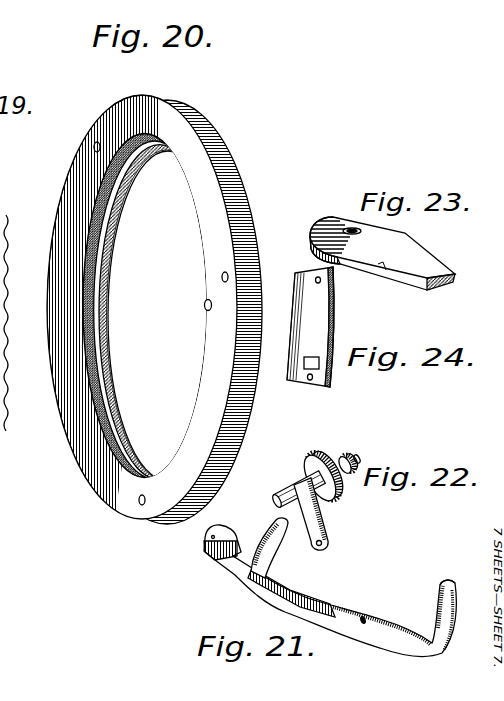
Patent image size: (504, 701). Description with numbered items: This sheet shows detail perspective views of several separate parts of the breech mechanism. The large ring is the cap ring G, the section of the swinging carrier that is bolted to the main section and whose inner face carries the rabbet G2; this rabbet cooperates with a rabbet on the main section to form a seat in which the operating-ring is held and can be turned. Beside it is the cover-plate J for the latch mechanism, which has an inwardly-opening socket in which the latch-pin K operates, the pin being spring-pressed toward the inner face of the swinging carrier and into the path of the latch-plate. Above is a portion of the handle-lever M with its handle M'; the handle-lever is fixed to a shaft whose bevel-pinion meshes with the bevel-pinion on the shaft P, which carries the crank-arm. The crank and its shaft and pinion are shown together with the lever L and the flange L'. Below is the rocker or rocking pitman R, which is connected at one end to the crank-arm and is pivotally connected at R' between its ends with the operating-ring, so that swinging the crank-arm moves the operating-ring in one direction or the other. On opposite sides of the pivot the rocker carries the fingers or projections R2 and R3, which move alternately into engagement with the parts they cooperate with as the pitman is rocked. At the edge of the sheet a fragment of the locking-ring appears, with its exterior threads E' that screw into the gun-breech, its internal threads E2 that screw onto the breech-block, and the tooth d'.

In FIG. 20, the cap ring G is at (154, 309).
In FIG. 20, the rabbet G2 is at (98, 347).
In FIG. 20, the latch-pin K is at (205, 309).
In FIG. 23, the handle-lever M is at (382, 253).
In FIG. 23, the handle M' is at (302, 240).
In FIG. 24, the cover-plate J is at (320, 323).
In FIG. 22, the lever L is at (312, 510).
In FIG. 22, the flange of lever shaft L' is at (324, 463).
In FIG. 22, the shaft P is at (353, 467).
In FIG. 21, the rocker or rocking pitman R is at (330, 591).
In FIG. 21, the pivot R' is at (349, 643).
In FIG. 21, the finger or projection R2 is at (447, 580).
In FIG. 21, the finger or projection R3 is at (272, 523).
In FIG. 19, the internal threads E2 is at (2, 228).
In FIG. 19, the tooth d' is at (17, 355).
In FIG. 19, the exterior threads E' is at (15, 412).